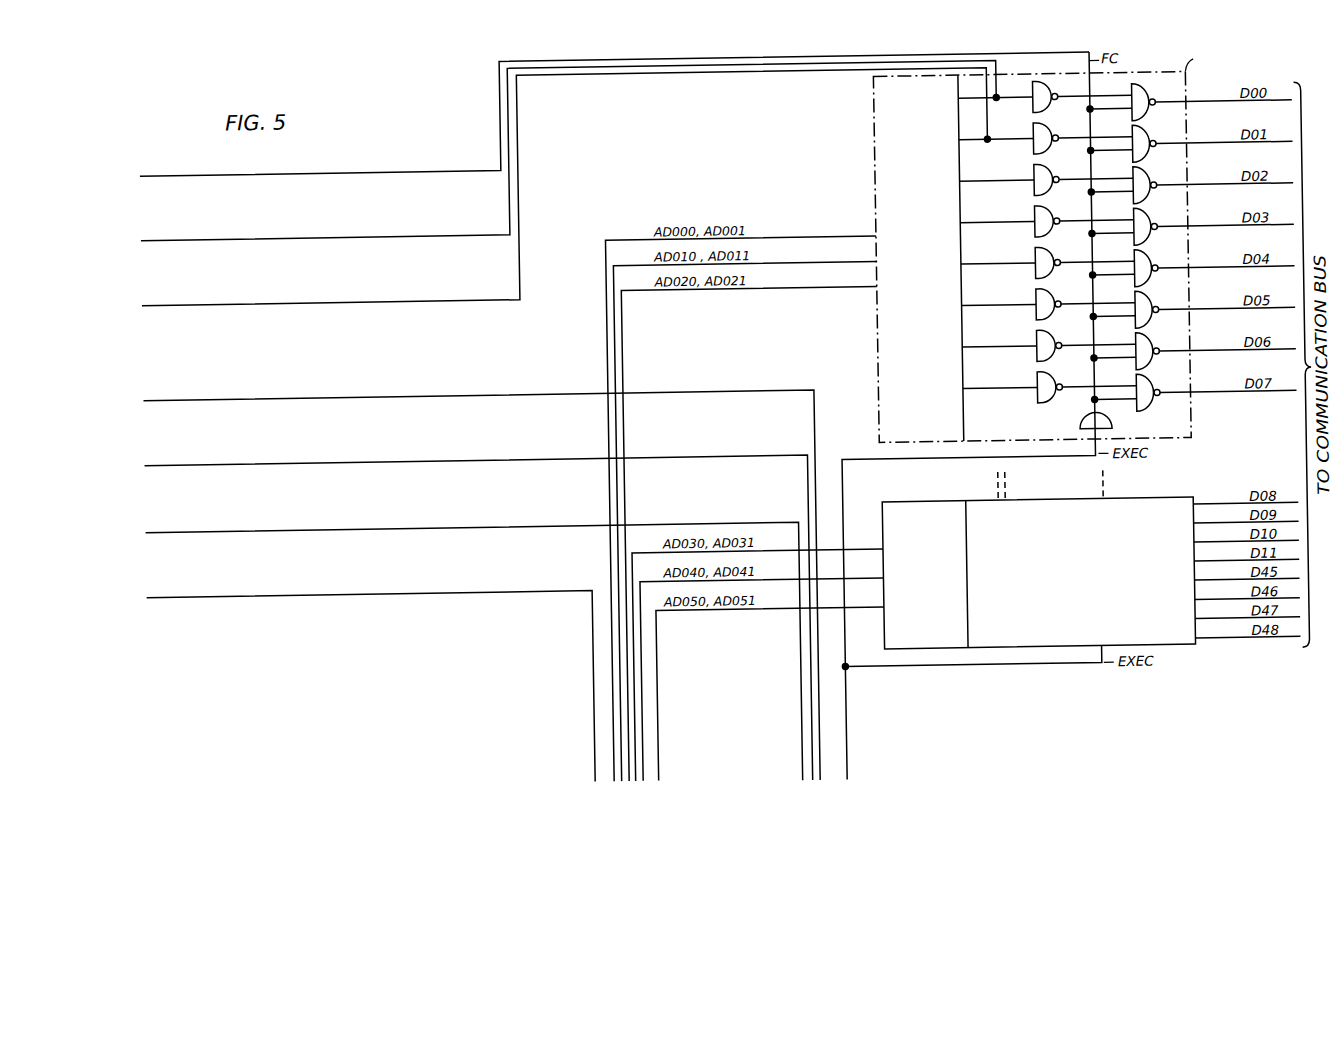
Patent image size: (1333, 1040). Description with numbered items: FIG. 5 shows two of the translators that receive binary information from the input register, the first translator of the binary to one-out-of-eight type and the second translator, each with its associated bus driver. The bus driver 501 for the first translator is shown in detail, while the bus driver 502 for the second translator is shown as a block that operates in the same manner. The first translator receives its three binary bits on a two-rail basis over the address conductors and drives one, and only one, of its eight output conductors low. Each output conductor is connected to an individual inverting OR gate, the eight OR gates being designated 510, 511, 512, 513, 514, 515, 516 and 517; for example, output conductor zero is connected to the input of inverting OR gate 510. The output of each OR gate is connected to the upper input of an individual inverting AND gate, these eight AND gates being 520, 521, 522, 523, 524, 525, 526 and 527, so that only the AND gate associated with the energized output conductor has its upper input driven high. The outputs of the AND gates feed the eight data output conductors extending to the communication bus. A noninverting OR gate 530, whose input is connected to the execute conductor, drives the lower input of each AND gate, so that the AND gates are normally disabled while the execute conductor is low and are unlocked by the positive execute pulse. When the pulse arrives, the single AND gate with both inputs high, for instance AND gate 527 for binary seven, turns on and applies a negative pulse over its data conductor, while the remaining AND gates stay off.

The bus driver 501 is at (1137, 74).
The bus driver 502 is at (1136, 500).
The inverting OR gate 510 is at (1033, 104).
The inverting OR gate 511 is at (1033, 145).
The inverting OR gate 512 is at (1033, 186).
The inverting OR gate 513 is at (1033, 228).
The inverting OR gate 514 is at (1033, 270).
The inverting OR gate 515 is at (1033, 311).
The inverting OR gate 516 is at (1033, 352).
The inverting OR gate 517 is at (1033, 394).
The inverting AND gate 520 is at (1148, 117).
The inverting AND gate 521 is at (1148, 158).
The inverting AND gate 522 is at (1148, 200).
The inverting AND gate 523 is at (1148, 242).
The inverting AND gate 524 is at (1148, 283).
The inverting AND gate 525 is at (1148, 324).
The inverting AND gate 526 is at (1148, 366).
The inverting AND gate 527 is at (1148, 408).
The noninverting OR gate 530 is at (1077, 422).